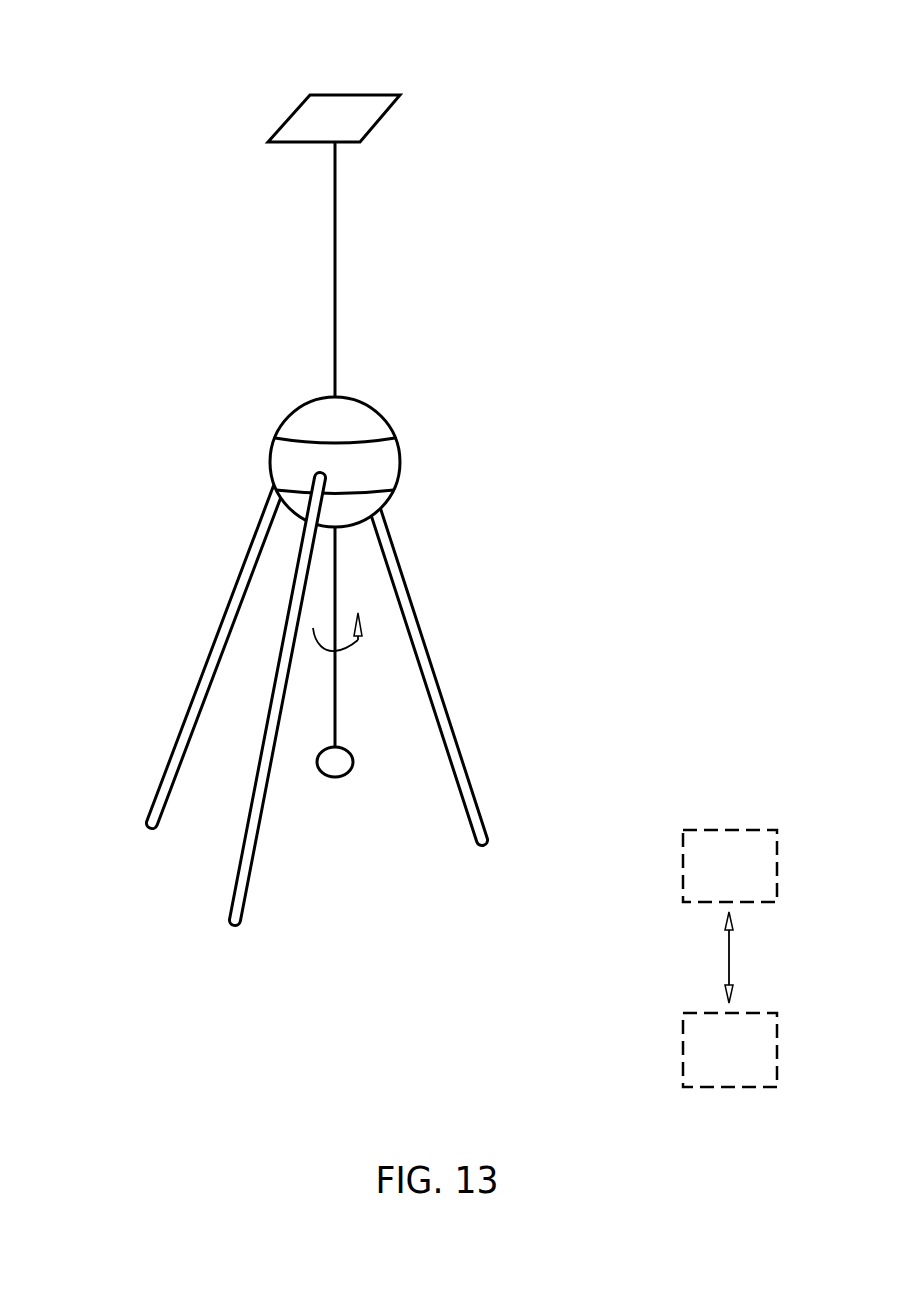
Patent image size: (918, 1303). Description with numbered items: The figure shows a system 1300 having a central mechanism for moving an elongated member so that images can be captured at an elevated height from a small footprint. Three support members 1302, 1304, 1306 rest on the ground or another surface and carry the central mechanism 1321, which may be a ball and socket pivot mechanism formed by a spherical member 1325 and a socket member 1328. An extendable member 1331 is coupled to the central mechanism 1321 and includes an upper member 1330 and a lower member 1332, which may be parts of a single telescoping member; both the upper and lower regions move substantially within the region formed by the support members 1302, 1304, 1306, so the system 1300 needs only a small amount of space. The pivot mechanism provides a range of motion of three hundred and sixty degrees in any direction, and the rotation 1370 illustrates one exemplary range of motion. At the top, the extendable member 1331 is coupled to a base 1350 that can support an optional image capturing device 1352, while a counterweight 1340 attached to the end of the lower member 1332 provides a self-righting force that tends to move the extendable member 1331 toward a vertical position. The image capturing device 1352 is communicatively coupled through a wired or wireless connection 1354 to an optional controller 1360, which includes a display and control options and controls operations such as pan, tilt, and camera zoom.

The system 1300 is at (682, 98).
The support member 1302 is at (477, 795).
The support member 1304 is at (254, 864).
The support member 1306 is at (176, 733).
The central mechanism 1321 is at (437, 440).
The spherical member 1325 is at (370, 402).
The socket member 1328 is at (384, 470).
The upper member 1330 is at (333, 296).
The extendable member 1331 is at (365, 257).
The lower member 1332 is at (337, 713).
The counterweight 1340 is at (338, 782).
The base 1350 is at (343, 103).
The image capturing device 1352 is at (702, 880).
The wired or wireless connection 1354 is at (730, 957).
The controller 1360 is at (702, 1064).
The rotation 1370 is at (358, 641).